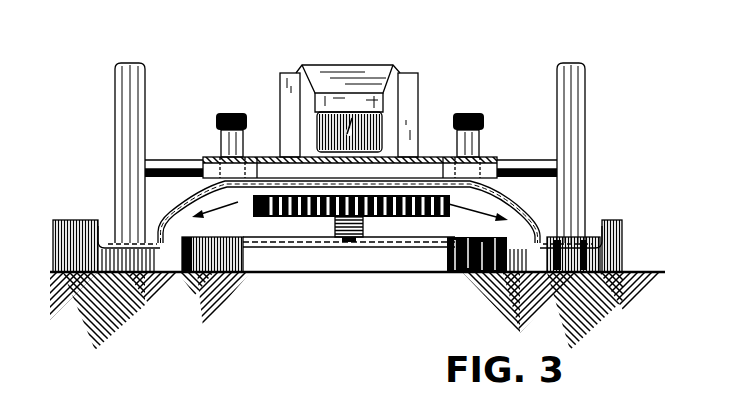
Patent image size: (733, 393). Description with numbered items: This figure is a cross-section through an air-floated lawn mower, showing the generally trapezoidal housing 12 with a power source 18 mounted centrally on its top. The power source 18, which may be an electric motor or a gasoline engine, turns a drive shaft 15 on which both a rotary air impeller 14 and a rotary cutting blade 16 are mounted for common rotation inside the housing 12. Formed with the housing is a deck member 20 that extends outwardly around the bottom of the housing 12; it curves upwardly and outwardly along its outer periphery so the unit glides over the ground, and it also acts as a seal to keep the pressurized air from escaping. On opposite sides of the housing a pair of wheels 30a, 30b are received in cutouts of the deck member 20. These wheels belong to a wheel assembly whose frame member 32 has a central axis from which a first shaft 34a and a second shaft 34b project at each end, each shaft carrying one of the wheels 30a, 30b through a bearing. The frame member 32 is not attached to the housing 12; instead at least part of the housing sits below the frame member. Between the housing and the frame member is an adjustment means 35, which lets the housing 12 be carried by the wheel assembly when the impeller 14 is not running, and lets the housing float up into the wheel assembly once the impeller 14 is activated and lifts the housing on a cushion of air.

The housing 12 is at (536, 238).
The rotary air impeller 14 is at (307, 215).
The drive shaft 15 is at (277, 210).
The rotary cutting blade 16 is at (387, 237).
The power source 18 is at (328, 65).
The deck member 20 is at (103, 232).
The wheel 30a is at (587, 127).
The wheel 30b is at (115, 130).
The frame member 32 is at (448, 153).
The first shaft 34a is at (162, 160).
The second shaft 34b is at (517, 157).
The adjustment means 35 is at (468, 100).